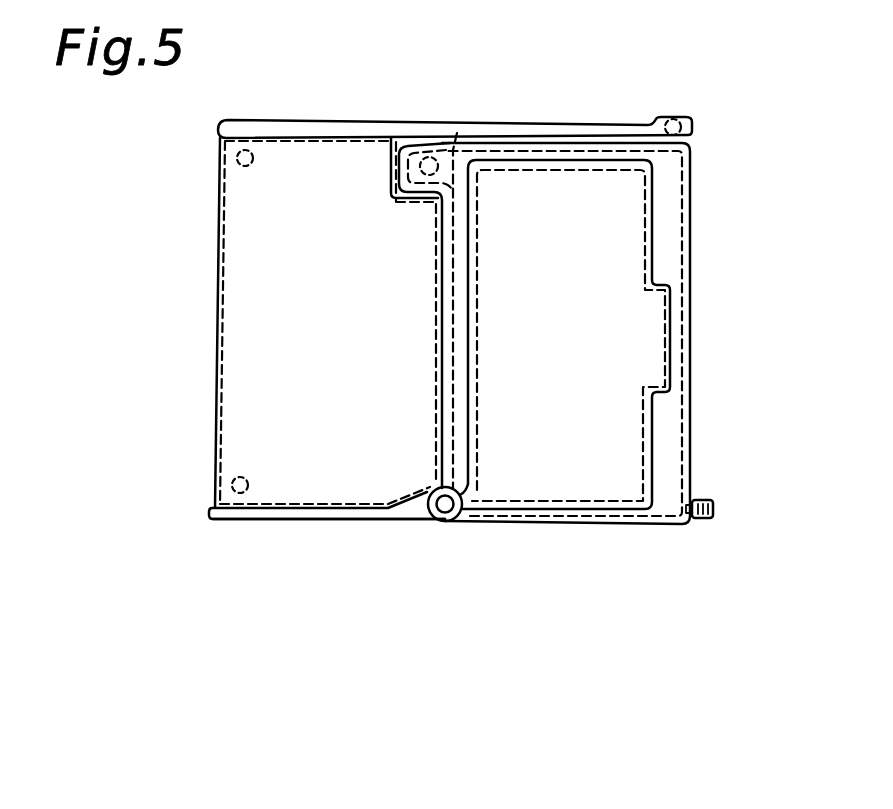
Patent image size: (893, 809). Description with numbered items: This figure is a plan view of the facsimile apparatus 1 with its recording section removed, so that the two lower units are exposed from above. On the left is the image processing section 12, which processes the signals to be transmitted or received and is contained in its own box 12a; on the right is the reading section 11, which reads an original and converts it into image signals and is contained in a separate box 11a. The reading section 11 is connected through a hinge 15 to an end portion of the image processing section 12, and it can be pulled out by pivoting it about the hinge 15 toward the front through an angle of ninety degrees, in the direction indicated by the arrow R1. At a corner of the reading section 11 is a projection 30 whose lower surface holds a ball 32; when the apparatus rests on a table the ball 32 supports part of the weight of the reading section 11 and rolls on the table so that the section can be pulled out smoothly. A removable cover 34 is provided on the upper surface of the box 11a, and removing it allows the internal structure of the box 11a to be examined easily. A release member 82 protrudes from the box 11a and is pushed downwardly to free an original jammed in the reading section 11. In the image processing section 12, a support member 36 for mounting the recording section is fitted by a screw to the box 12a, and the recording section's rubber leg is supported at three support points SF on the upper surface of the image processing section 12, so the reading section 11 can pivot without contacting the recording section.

The facsimile apparatus 1 is at (363, 528).
The reading section 11 is at (694, 191).
The box of the reading section 11a is at (693, 247).
The image processing section 12 is at (214, 261).
The box of the image processing section 12a is at (214, 302).
The hinge 15 is at (452, 522).
The projection 30 is at (412, 141).
The ball 32 is at (457, 133).
The cover 34 is at (643, 348).
The support member 36 is at (307, 127).
The release member 82 is at (714, 507).
The support points SF is at (236, 158).
The direction of pivoting of the reading section R1 is at (676, 540).